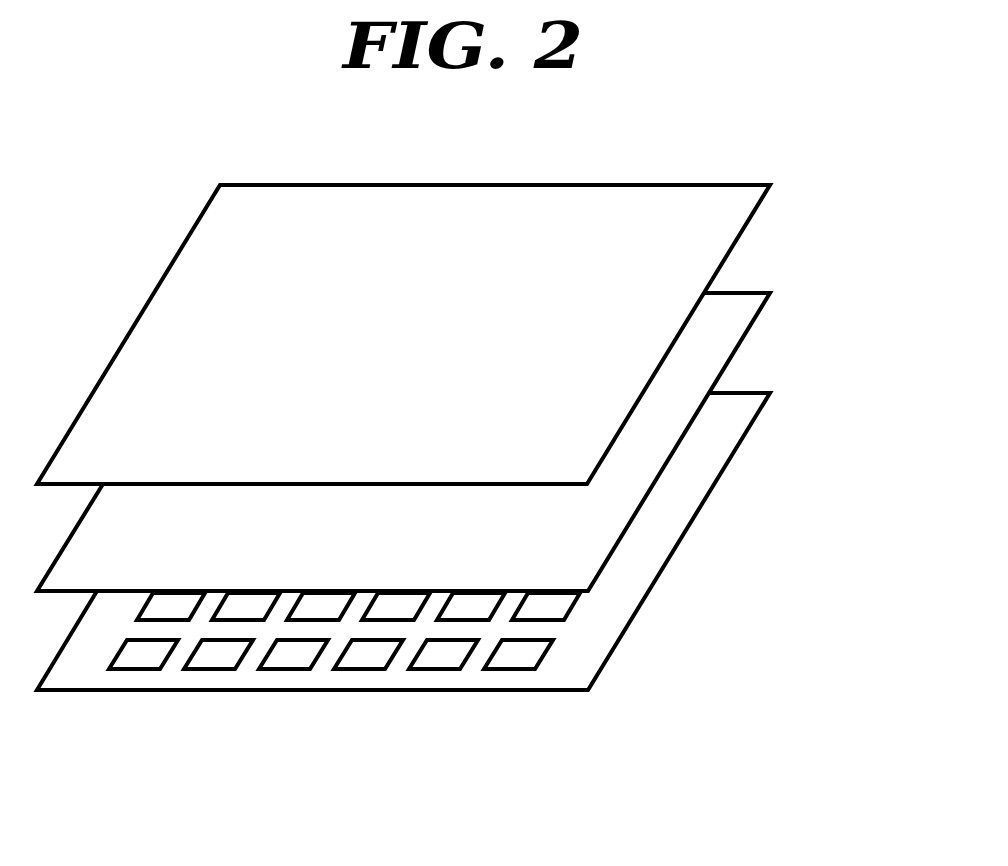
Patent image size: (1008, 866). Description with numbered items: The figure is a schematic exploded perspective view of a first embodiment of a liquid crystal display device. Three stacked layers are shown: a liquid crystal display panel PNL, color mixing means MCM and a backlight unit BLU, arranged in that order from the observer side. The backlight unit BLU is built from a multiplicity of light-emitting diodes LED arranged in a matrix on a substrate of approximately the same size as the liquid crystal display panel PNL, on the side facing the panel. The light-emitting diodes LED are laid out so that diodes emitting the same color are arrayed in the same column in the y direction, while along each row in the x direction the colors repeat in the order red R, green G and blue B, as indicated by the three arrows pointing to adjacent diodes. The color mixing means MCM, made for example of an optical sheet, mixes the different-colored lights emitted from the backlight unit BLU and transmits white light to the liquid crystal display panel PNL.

The liquid crystal display panel PNL is at (190, 275).
The color mixing means MCM is at (735, 323).
The backlight unit BLU is at (702, 510).
The light-emitting diodes LED is at (571, 608).
The red light-emitting diode R is at (137, 675).
The green light-emitting diode G is at (212, 675).
The blue light-emitting diode B is at (287, 675).